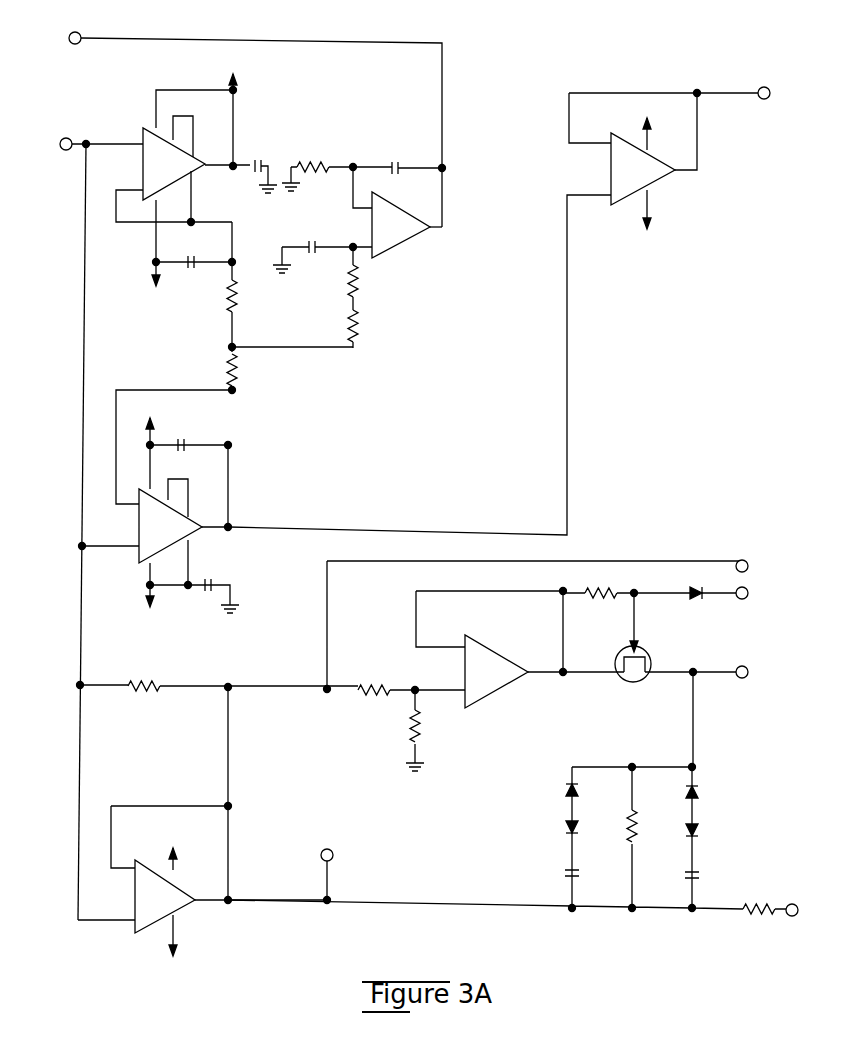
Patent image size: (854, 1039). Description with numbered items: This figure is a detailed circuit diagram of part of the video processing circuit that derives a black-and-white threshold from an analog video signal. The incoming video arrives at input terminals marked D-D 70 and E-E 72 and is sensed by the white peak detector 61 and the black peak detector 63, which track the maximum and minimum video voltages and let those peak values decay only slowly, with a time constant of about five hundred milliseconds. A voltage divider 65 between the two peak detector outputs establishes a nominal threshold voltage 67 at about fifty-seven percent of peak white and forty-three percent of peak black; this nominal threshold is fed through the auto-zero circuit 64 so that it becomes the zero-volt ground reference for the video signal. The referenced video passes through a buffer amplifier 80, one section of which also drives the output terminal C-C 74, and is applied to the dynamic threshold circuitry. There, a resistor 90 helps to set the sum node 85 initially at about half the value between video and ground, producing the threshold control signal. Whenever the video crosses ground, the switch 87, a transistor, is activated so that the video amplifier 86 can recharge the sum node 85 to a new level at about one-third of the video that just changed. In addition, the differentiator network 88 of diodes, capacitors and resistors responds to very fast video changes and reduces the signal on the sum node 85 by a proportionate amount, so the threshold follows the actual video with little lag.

The D-D input terminal 70 is at (106, 36).
The E-E input terminal 72 is at (100, 142).
The C-C output terminal 74 is at (734, 96).
The white peak detector 61 is at (246, 229).
The black peak detector 63 is at (268, 492).
The auto-zero circuit 64 is at (470, 252).
The voltage divider 65 is at (196, 335).
The nominal threshold voltage 67 is at (318, 348).
The buffer amplifier 80 is at (610, 233).
The sum node 85 is at (698, 676).
The video amplifier 86 is at (525, 719).
The switch 87 is at (675, 643).
The differentiator network 88 is at (781, 854).
The resistor 90 is at (637, 815).